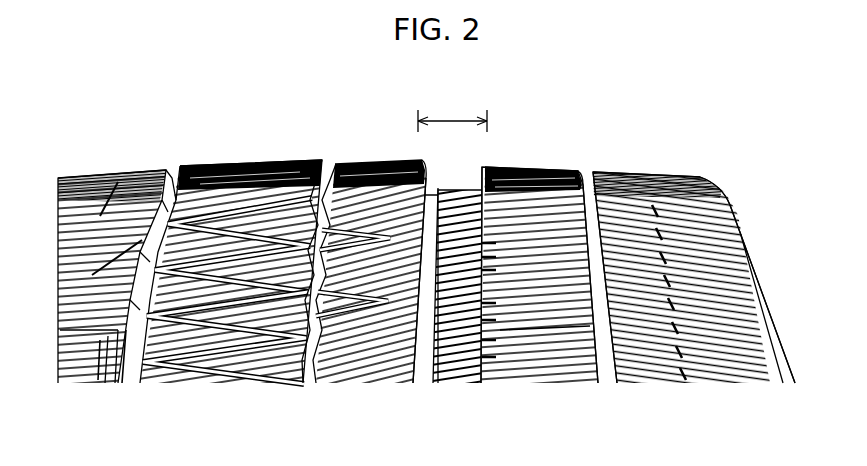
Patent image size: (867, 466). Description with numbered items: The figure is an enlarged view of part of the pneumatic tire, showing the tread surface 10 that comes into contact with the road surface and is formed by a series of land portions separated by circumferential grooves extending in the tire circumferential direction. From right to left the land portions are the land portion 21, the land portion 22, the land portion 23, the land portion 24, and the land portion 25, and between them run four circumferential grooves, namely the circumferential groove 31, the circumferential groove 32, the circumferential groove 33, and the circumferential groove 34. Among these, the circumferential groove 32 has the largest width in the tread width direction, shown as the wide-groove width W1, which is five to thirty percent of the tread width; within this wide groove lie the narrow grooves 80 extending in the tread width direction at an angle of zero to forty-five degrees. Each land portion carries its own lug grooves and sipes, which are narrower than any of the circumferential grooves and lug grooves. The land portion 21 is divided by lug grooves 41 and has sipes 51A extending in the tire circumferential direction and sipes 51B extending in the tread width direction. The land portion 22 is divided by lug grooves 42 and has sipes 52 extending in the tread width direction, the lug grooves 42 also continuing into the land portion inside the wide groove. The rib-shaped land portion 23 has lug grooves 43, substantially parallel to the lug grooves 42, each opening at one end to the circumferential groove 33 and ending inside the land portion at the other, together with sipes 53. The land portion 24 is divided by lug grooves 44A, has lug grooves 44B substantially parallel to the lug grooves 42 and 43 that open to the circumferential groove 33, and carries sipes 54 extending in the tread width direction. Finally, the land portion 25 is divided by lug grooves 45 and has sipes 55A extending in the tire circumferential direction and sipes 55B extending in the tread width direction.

The tread surface 10 is at (641, 132).
The land portion 21 is at (669, 174).
The land portion 22 is at (537, 162).
The land portion 23 is at (411, 160).
The land portion 24 is at (288, 162).
The land portion 25 is at (85, 172).
The circumferential groove 31 is at (586, 172).
The circumferential groove 32 is at (472, 159).
The circumferential groove 33 is at (322, 172).
The circumferential groove 34 is at (180, 170).
The lug grooves 41 is at (750, 245).
The lug grooves 42 is at (524, 362).
The lug grooves 43 is at (366, 188).
The lug grooves 44A is at (185, 355).
The lug grooves 44B is at (237, 342).
The lug grooves 45 is at (102, 342).
The sipes 51A is at (686, 376).
The sipes 51B is at (722, 213).
The sipes 52 is at (567, 340).
The sipes 53 is at (390, 358).
The sipes 54 is at (243, 178).
The sipes 55A is at (60, 333).
The sipes 55B is at (112, 205).
The narrow grooves 80 is at (455, 350).
The wide-groove width W1 is at (452, 112).